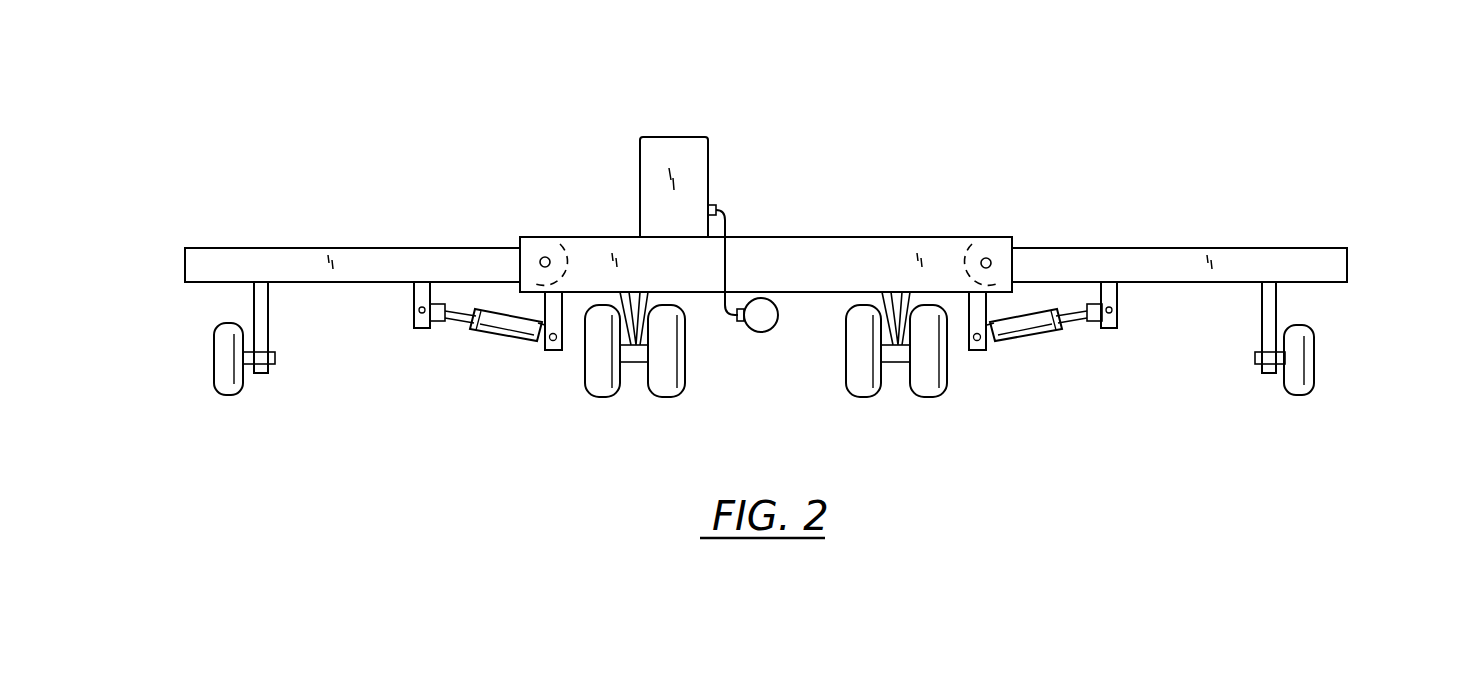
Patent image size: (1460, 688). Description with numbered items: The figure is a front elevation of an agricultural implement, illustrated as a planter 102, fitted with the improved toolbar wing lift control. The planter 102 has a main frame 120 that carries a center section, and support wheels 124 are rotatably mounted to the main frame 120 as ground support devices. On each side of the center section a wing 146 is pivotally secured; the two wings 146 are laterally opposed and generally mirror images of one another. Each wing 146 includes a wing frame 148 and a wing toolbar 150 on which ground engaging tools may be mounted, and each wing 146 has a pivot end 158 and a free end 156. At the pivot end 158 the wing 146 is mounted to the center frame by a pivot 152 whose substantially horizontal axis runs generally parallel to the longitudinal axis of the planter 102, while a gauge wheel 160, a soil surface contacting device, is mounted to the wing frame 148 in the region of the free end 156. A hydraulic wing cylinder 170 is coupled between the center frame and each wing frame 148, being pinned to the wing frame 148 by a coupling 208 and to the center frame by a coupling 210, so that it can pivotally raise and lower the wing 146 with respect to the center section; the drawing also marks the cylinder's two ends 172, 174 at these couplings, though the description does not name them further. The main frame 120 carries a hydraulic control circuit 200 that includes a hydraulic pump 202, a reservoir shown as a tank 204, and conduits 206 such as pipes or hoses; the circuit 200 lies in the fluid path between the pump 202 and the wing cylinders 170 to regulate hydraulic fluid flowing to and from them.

The planter 102 is at (976, 86).
The main frame 120 is at (848, 237).
The support wheels 124 is at (668, 392).
The wing 146 is at (319, 292).
The wing frame 148 is at (367, 285).
The wing toolbar 150 is at (316, 212).
The pivot 152 is at (541, 256).
The free end 156 is at (185, 256).
The pivot end 158 is at (575, 243).
The gauge wheel 160 is at (216, 365).
The hydraulic wing cylinder 170 is at (510, 343).
The cylinder rod end 172 is at (434, 343).
The cylinder base end 174 is at (536, 360).
The hydraulic control circuit 200 is at (737, 146).
The hydraulic pump 202 is at (762, 333).
The tank 204 is at (672, 137).
The conduits 206 is at (728, 222).
The coupling 208 is at (415, 330).
The coupling 210 is at (565, 355).